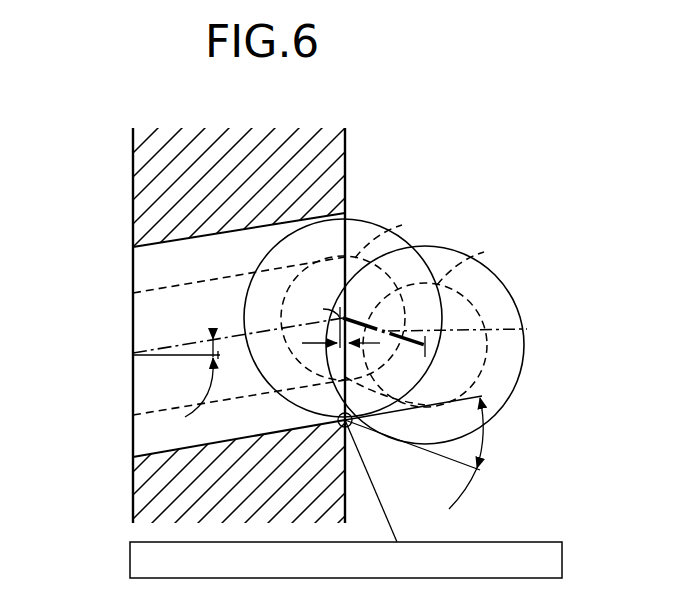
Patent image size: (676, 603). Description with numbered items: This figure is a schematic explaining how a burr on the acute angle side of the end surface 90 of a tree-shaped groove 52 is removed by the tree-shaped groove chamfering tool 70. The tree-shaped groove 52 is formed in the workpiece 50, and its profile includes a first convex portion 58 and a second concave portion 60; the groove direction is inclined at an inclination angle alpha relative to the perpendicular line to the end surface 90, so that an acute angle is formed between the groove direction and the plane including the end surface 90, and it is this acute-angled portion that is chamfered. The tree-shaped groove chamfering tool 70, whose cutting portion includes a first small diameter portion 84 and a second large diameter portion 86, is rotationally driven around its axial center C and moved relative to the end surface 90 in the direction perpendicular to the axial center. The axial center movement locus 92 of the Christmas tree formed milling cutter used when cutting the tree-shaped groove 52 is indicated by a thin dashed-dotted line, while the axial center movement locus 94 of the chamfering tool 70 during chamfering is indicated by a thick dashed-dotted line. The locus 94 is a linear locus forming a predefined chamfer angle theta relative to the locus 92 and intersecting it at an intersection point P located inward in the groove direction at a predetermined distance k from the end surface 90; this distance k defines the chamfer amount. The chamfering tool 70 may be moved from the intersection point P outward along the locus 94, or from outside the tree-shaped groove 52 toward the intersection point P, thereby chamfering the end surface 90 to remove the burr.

The workpiece 50 is at (131, 161).
The tree-shaped groove 52 is at (126, 427).
The first convex portion 58 is at (150, 300).
The second concave portion 60 is at (152, 252).
The tree-shaped groove chamfering tool 70 is at (418, 320).
The first small diameter portion 84 is at (392, 303).
The second large diameter portion 86 is at (410, 246).
The end surface 90 is at (353, 208).
The axial center movement locus 92 is at (152, 355).
The axial center movement locus 94 is at (527, 330).